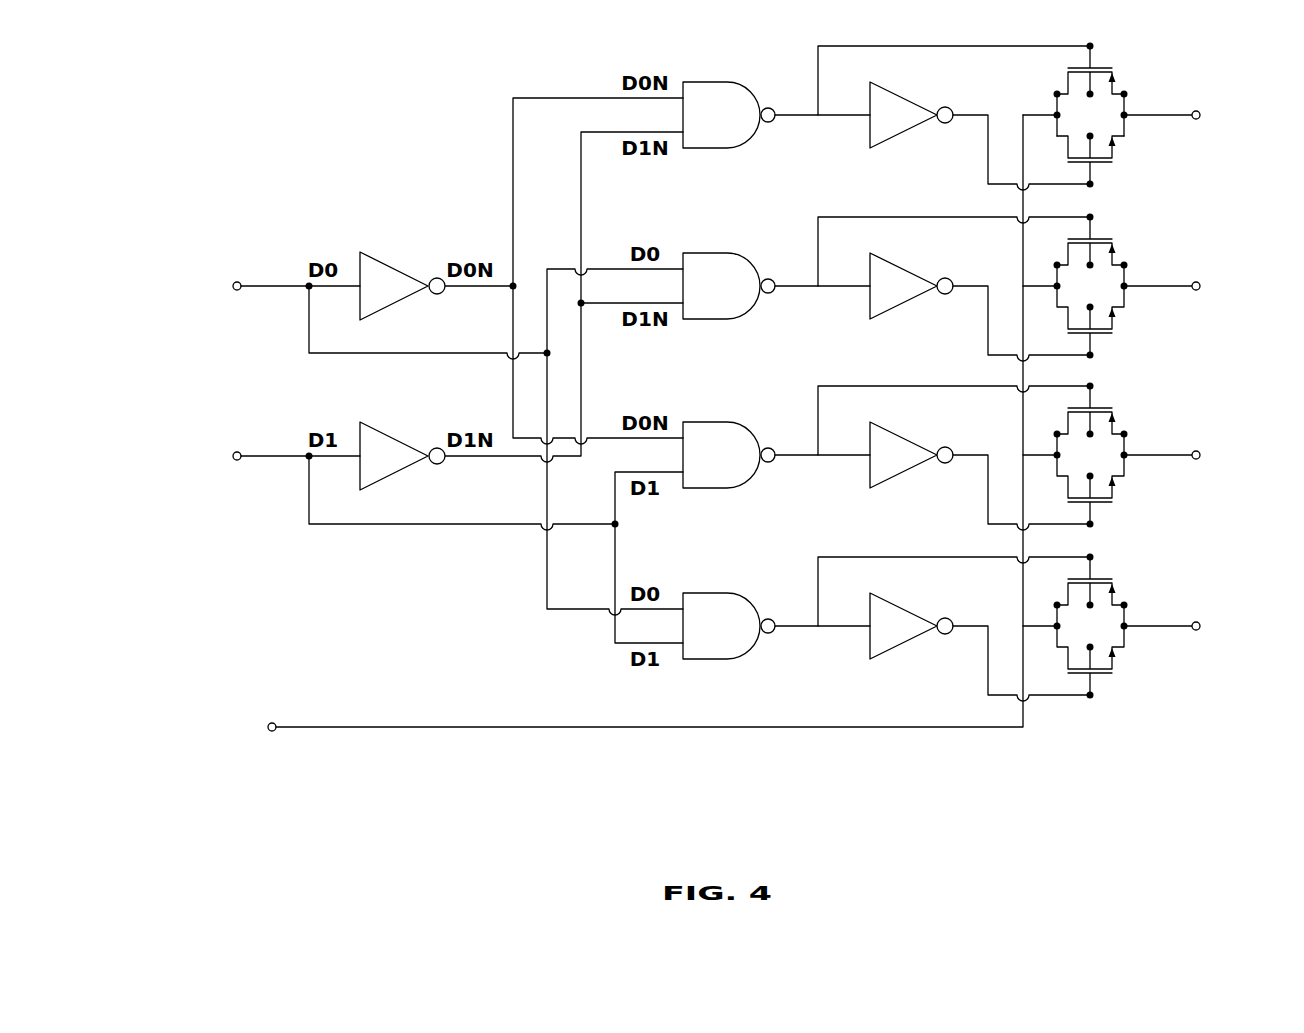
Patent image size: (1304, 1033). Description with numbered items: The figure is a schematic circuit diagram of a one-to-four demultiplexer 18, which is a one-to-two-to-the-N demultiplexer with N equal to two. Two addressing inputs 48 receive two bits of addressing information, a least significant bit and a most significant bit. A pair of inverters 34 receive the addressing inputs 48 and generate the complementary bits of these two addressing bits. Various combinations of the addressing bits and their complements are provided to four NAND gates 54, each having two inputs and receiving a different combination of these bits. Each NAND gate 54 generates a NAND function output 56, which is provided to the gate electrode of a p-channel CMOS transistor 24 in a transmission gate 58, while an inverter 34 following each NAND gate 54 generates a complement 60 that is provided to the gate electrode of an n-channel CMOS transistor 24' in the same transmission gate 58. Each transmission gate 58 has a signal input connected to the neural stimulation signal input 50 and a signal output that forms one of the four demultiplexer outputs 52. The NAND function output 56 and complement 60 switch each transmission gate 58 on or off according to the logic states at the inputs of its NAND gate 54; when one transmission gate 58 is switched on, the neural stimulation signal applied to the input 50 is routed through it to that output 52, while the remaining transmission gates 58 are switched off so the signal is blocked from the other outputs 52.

The 1:4 demultiplexer 18 is at (986, 762).
The p-channel CMOS transistor 24 is at (1075, 70).
The n-channel CMOS transistor 24' is at (1073, 160).
The inverter 34 is at (393, 308).
The addressing input 48 is at (233, 282).
The neural stimulation signal input 50 is at (268, 723).
The demultiplexer output 52 is at (1198, 280).
The NAND gate 54 is at (733, 148).
The NAND function output 56 is at (797, 112).
The transmission gate 58 is at (1123, 80).
The complement 60 is at (974, 113).